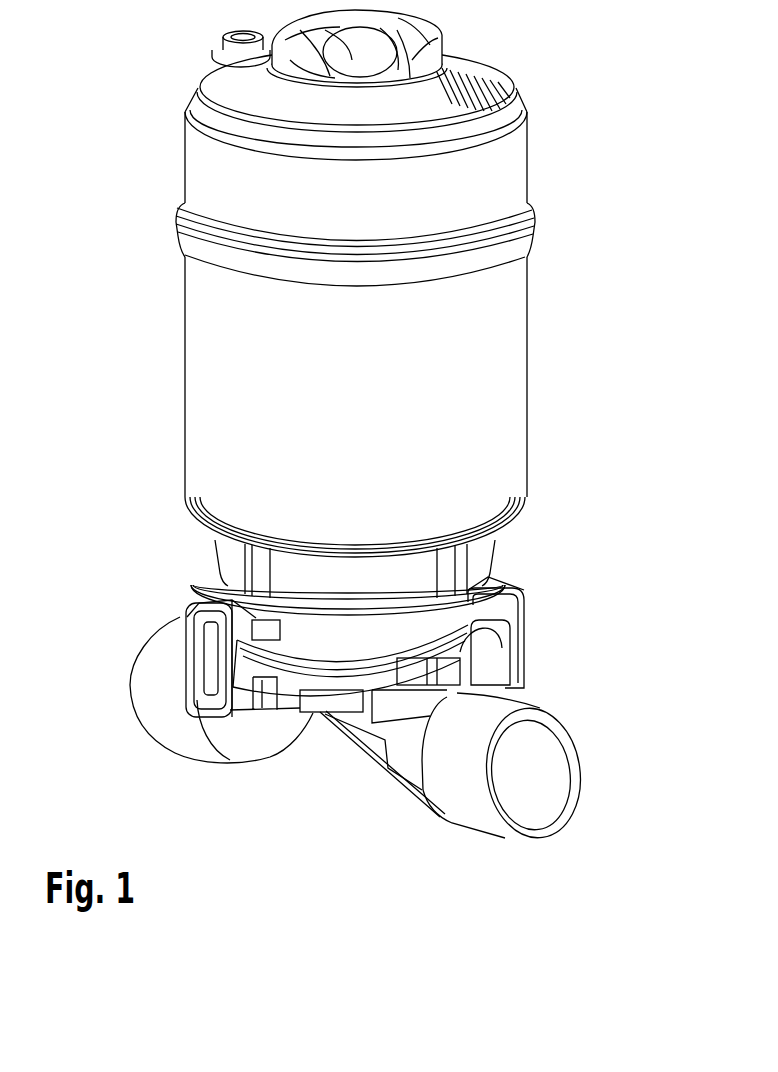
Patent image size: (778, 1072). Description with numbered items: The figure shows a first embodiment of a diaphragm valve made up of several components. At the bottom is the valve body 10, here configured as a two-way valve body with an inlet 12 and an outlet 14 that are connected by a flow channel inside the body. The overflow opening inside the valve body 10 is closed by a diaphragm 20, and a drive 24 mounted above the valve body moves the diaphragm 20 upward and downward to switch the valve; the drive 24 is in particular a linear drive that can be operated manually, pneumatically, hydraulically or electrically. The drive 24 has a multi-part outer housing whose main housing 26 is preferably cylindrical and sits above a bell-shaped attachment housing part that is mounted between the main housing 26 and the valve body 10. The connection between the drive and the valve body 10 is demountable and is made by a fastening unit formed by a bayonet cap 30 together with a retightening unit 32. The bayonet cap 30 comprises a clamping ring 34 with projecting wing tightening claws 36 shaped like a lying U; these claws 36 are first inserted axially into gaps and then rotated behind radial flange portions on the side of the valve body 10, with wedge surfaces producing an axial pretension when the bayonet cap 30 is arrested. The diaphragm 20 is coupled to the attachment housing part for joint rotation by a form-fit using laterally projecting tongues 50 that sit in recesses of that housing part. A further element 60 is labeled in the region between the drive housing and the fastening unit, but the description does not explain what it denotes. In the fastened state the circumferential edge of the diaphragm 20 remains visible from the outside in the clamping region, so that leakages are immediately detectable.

The valve body 10 is at (447, 836).
The inlet 12 is at (557, 758).
The outlet 14 is at (153, 704).
The diaphragm 20 is at (323, 690).
The drive 24 is at (546, 324).
The main housing 26 is at (500, 432).
The bayonet cap 30 is at (537, 606).
The retightening unit 32 is at (519, 548).
The clamping ring 34 is at (307, 617).
The wing tightening claws 36 is at (518, 658).
The tongues 50 is at (440, 672).
The connecting cylinder 60 is at (225, 552).